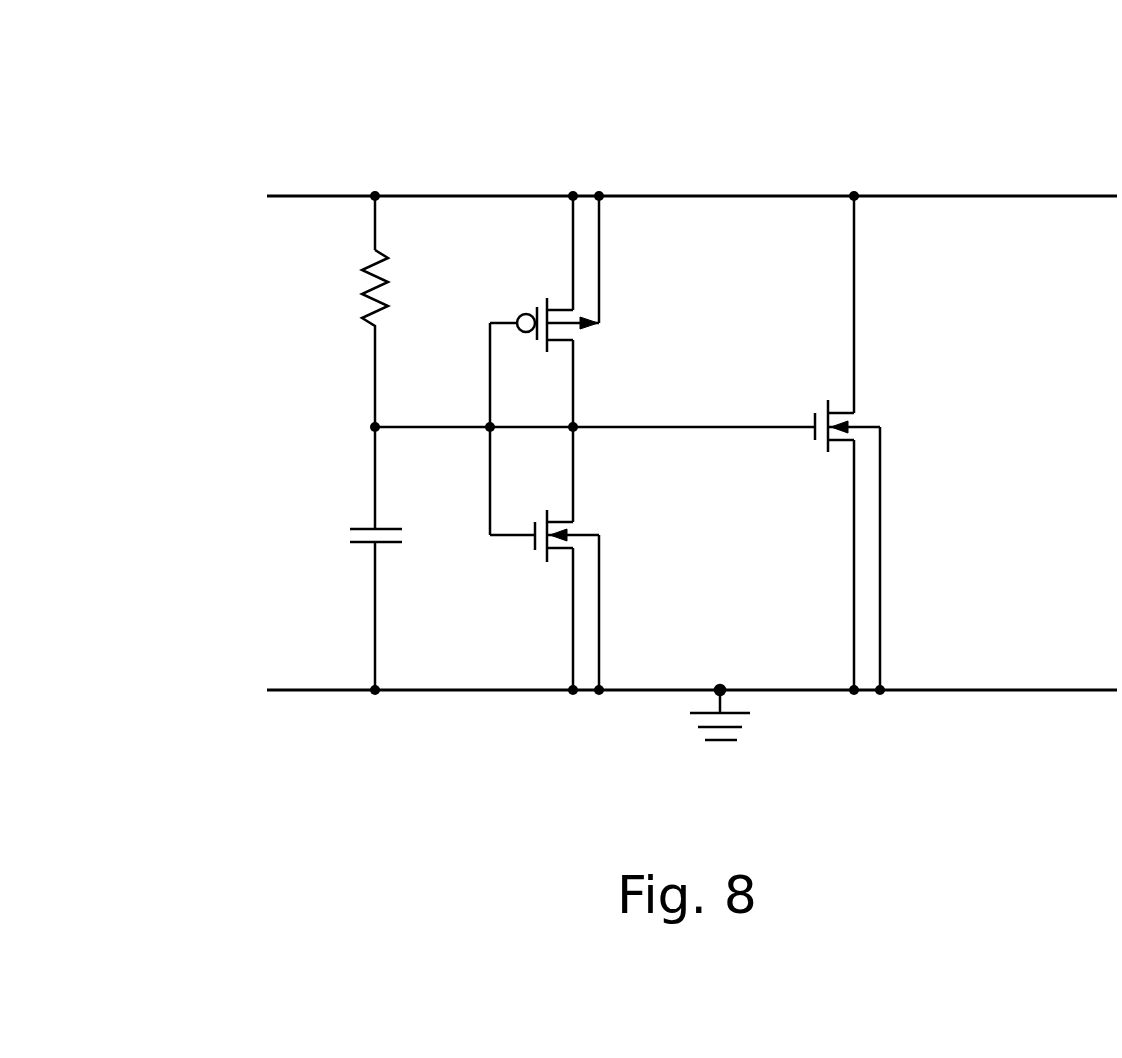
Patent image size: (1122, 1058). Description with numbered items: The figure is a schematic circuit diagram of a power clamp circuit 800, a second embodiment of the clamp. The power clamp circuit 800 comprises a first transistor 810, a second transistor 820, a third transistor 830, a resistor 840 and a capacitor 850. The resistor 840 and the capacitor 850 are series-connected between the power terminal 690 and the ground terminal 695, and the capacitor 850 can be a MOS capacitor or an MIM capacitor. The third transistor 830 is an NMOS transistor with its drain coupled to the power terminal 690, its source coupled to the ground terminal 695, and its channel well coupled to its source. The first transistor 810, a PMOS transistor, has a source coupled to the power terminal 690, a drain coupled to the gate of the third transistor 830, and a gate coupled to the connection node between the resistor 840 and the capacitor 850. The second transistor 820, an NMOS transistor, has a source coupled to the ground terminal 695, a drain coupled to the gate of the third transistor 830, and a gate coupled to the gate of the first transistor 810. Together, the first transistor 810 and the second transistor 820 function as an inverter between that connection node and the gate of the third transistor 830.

The power clamp circuit 800 is at (193, 133).
The power terminal 690 is at (1033, 196).
The ground terminal 695 is at (1033, 690).
The first transistor 810 is at (575, 333).
The second transistor 820 is at (573, 528).
The third transistor 830 is at (855, 418).
The resistor 840 is at (366, 319).
The capacitor 850 is at (360, 527).